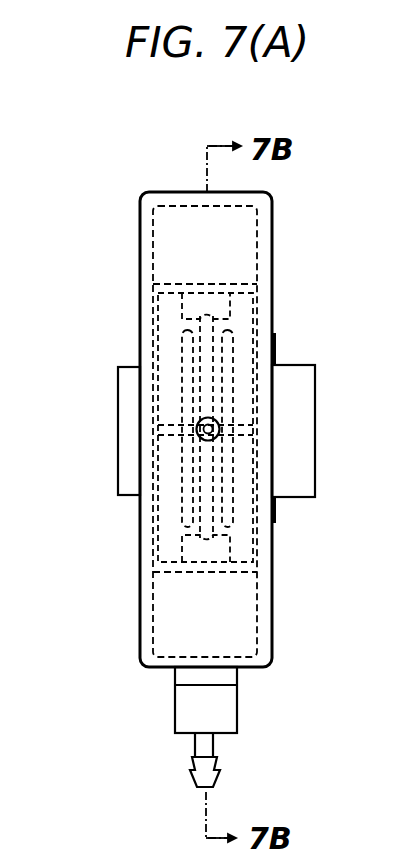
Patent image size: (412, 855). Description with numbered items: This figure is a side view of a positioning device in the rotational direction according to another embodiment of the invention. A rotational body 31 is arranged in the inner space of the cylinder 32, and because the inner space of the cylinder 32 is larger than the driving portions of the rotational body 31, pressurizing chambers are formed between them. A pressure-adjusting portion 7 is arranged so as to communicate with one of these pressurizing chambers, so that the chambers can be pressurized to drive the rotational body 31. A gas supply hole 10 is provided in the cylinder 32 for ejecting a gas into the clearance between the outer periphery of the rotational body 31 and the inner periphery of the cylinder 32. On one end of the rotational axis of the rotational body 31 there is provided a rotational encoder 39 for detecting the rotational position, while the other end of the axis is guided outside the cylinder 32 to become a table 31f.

The cylinder 32 is at (266, 202).
The table 31f is at (128, 366).
The rotational encoder 39 is at (293, 368).
The rotational body 31 is at (245, 548).
The gas supply hole 10 is at (215, 438).
The pressure-adjusting portion 7 is at (238, 727).